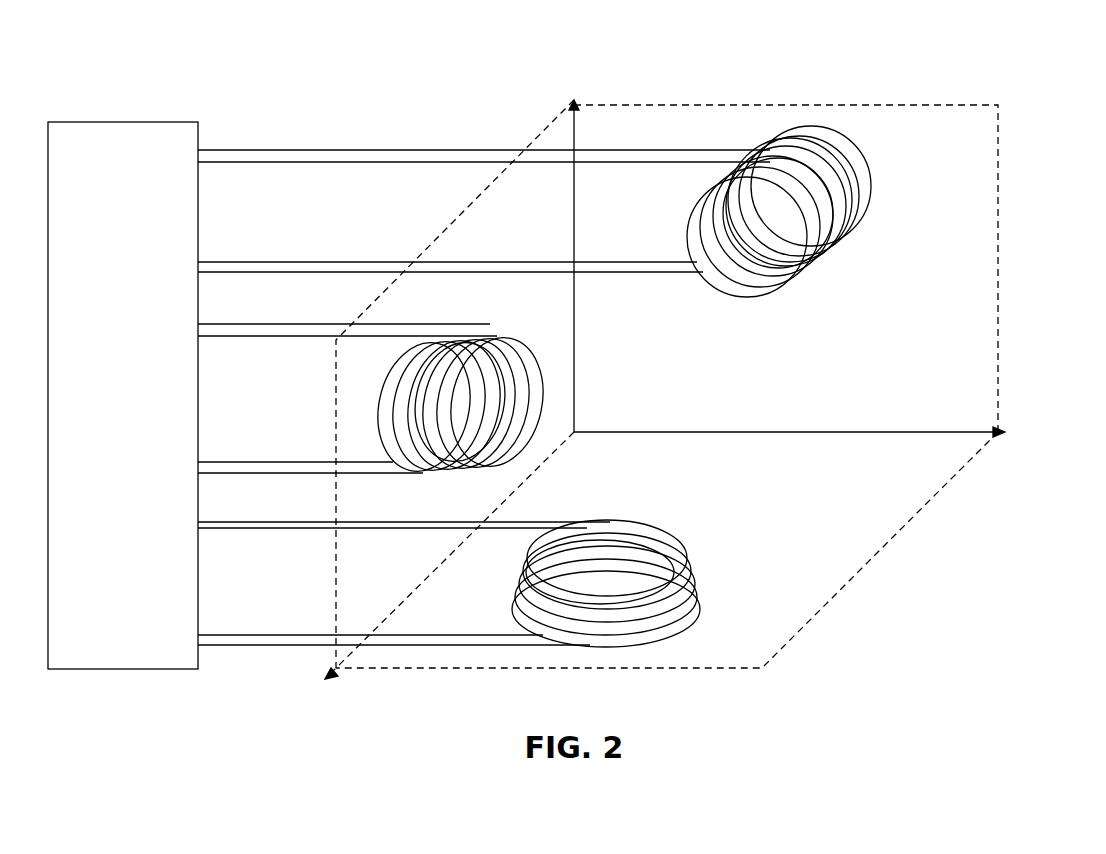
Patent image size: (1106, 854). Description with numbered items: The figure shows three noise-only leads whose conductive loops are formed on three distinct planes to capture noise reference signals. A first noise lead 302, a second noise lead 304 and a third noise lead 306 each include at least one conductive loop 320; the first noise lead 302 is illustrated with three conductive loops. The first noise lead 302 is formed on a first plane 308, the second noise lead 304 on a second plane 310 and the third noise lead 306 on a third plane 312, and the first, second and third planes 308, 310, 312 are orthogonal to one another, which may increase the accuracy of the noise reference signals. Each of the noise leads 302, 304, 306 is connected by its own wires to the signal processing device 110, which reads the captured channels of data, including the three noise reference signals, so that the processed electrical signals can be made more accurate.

The signal processing device 110 is at (160, 122).
The first noise lead 302 is at (862, 175).
The second noise lead 304 is at (692, 568).
The third noise lead 306 is at (535, 345).
The first plane 308 is at (965, 232).
The second plane 310 is at (885, 505).
The third plane 312 is at (360, 542).
The conductive loop 320 is at (780, 300).